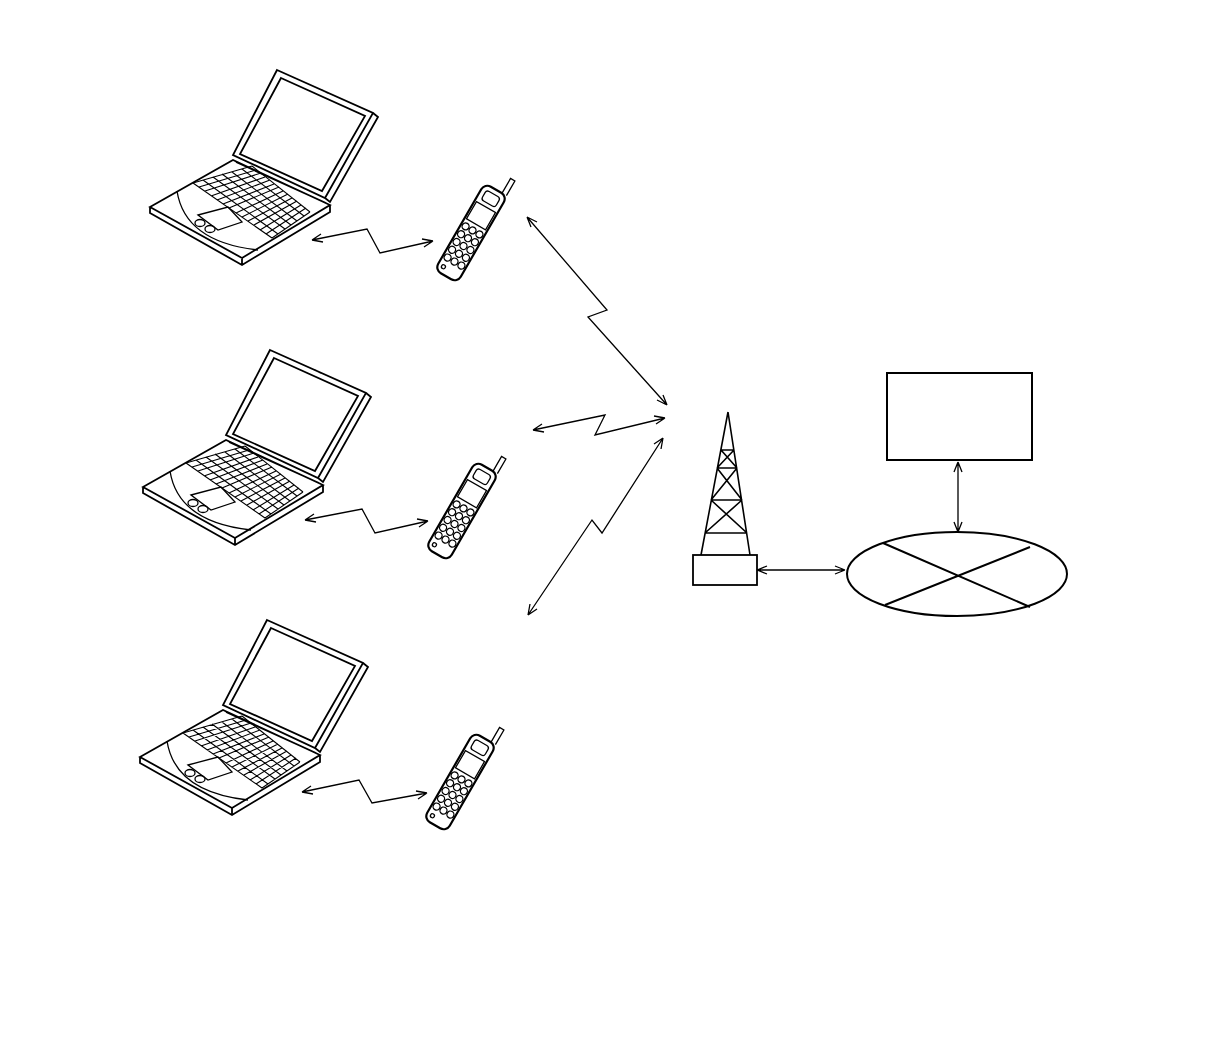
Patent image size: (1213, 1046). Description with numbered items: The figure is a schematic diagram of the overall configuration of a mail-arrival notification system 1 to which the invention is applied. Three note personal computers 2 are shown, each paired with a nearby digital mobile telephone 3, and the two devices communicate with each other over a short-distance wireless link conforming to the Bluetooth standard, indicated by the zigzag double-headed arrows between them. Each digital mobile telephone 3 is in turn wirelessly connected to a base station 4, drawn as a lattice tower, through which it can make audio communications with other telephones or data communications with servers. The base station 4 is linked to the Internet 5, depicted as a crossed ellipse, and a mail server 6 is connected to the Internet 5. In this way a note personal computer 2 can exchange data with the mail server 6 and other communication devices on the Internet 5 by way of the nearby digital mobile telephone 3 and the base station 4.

The mail-arrival notification system 1 is at (1169, 317).
The note personal computer 2 is at (357, 102).
The digital mobile telephone 3 is at (489, 186).
The base station 4 is at (731, 449).
The Internet 5 is at (1044, 547).
The mail server 6 is at (974, 373).